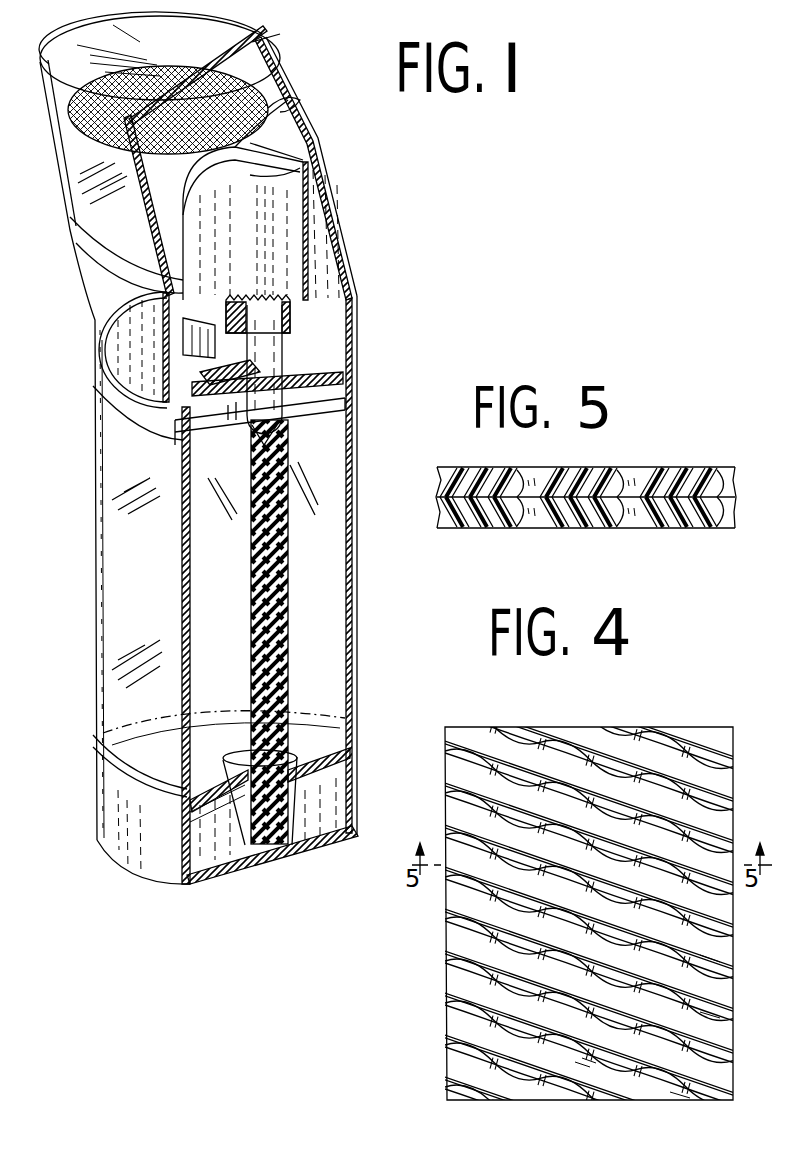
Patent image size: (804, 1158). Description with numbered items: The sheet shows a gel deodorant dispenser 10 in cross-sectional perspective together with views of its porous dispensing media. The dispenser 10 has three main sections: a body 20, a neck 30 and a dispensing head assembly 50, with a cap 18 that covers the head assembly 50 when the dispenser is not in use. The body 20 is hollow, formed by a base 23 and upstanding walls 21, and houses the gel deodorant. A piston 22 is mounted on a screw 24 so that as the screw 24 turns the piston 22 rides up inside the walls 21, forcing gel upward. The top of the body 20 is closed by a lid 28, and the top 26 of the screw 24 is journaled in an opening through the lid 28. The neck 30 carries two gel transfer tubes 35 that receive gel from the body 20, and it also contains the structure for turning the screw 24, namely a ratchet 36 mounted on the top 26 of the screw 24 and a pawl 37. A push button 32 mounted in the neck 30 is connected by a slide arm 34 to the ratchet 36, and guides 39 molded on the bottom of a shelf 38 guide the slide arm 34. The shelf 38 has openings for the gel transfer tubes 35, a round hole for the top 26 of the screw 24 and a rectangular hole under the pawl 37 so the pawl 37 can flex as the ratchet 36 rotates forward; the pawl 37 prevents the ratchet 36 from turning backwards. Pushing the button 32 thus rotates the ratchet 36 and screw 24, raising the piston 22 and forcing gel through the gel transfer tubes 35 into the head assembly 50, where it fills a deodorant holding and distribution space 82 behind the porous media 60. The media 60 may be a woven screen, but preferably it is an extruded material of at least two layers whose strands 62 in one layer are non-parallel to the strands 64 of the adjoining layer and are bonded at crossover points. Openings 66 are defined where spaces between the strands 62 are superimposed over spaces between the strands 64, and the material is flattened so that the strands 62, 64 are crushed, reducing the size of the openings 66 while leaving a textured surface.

In FIG. 1, the gel deodorant dispenser 10 is at (70, 507).
In FIG. 1, the cap 18 is at (278, 60).
In FIG. 1, the body 20 is at (350, 467).
In FIG. 1, the upstanding walls 21 is at (125, 572).
In FIG. 1, the piston 22 is at (137, 747).
In FIG. 1, the base 23 is at (157, 843).
In FIG. 1, the screw 24 is at (270, 628).
In FIG. 1, the top of screw 26 is at (283, 417).
In FIG. 1, the lid 28 is at (317, 395).
In FIG. 1, the neck 30 is at (346, 210).
In FIG. 1, the push button 32 is at (113, 332).
In FIG. 1, the slide arm 34 is at (200, 395).
In FIG. 1, the gel transfer tubes 35 is at (197, 233).
In FIG. 1, the ratchet 36 is at (290, 305).
In FIG. 1, the pawl 37 is at (193, 341).
In FIG. 1, the shelf 38 is at (200, 374).
In FIG. 1, the guides 39 is at (222, 425).
In FIG. 1, the dispensing head assembly 50 is at (300, 124).
In FIG. 1, the porous media 60 is at (255, 33).
In FIG. 5, the porous media 60 is at (700, 445).
In FIG. 4, the porous media 60 is at (755, 758).
In FIG. 5, the strands in one layer 62 is at (734, 516).
In FIG. 4, the strands in one layer 62 is at (717, 1016).
In FIG. 5, the strands in adjoining layer 64 is at (730, 484).
In FIG. 4, the strands in adjoining layer 64 is at (715, 955).
In FIG. 4, the openings 66 is at (735, 902).
In FIG. 1, the deodorant holding and distribution space 82 is at (267, 110).